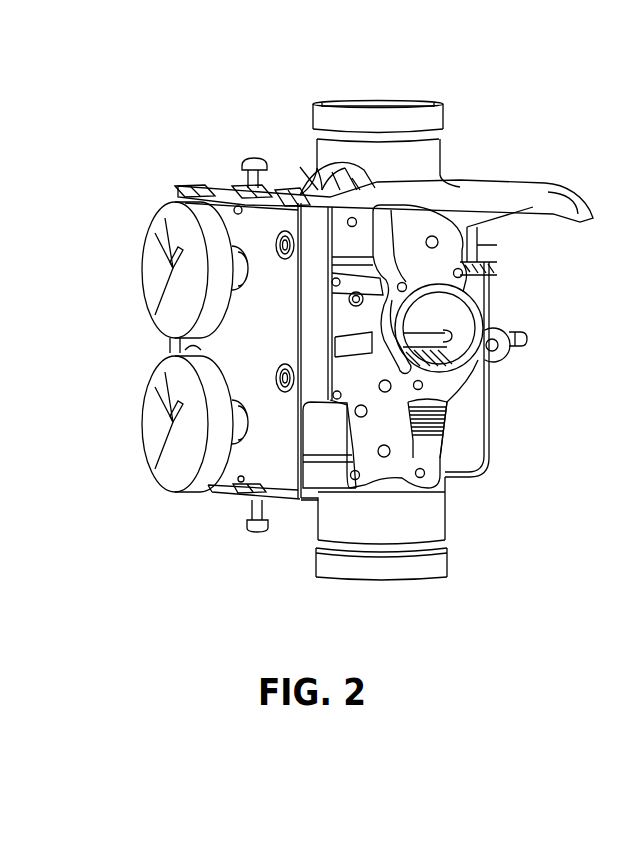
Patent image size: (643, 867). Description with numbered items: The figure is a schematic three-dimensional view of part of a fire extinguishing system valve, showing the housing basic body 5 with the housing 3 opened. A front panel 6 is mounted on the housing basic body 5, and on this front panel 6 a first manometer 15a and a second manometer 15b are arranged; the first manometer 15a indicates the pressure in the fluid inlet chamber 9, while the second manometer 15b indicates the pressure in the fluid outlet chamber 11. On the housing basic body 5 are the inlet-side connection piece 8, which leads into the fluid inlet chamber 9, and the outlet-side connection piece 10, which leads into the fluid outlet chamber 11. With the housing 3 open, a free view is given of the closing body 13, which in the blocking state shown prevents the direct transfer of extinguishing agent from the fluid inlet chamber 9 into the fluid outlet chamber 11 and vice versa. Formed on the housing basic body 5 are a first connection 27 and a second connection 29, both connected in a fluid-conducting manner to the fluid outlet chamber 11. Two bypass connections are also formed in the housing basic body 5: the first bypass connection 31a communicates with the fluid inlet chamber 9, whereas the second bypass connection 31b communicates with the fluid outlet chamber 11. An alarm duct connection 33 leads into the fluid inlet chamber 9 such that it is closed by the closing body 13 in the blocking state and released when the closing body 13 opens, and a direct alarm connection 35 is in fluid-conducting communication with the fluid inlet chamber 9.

The housing 3 is at (545, 163).
The housing basic body 5 is at (470, 187).
The front panel 6 is at (213, 195).
The inlet-side connection piece 8 is at (433, 567).
The fluid inlet chamber 9 is at (407, 595).
The outlet-side connection piece 10 is at (316, 114).
The fluid outlet chamber 11 is at (435, 306).
The closing body 13 is at (455, 377).
The first manometer 15a is at (153, 437).
The second manometer 15b is at (148, 262).
The first connection 27 is at (462, 300).
The second connection 29 is at (438, 243).
The first bypass connection 31a is at (367, 413).
The second bypass connection 31b is at (403, 327).
The alarm duct connection 33 is at (390, 388).
The direct alarm connection 35 is at (390, 454).